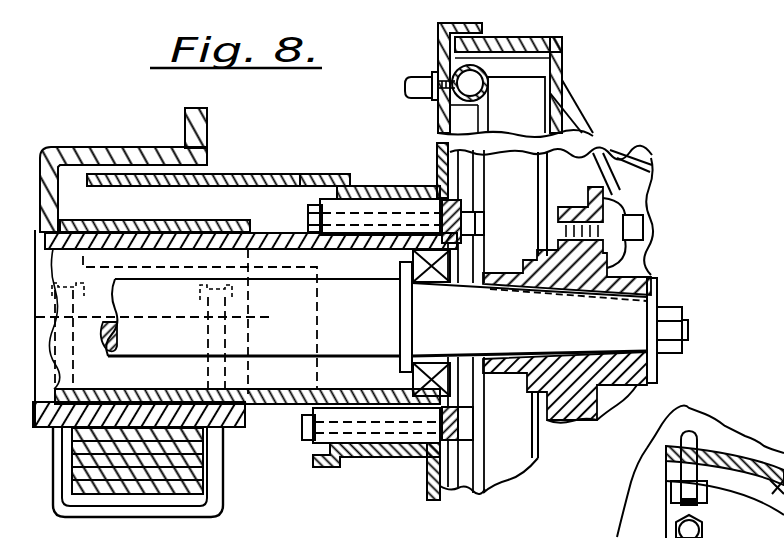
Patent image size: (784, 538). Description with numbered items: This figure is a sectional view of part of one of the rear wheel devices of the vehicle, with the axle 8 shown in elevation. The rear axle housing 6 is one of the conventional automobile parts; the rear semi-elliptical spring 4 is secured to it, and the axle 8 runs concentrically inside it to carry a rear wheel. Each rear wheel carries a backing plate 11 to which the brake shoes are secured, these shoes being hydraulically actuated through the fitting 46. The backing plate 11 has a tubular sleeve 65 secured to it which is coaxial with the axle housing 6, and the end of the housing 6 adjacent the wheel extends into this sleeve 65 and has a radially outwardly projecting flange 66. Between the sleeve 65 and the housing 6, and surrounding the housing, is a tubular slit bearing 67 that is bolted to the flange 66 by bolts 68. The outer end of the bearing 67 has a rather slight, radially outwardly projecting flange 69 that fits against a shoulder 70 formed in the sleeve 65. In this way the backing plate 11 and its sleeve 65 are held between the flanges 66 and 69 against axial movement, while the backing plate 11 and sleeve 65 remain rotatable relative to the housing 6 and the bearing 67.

The rear semi-elliptical spring 4 is at (197, 473).
The rear axle housing 6 is at (222, 232).
The axle 8 is at (355, 352).
The backing plate 11 is at (427, 478).
The fitting 46 is at (417, 77).
The tubular sleeve 65 is at (312, 177).
The flange 66 is at (463, 212).
The tubular slit bearing 67 is at (392, 193).
The bolts 68 is at (387, 201).
The flange 69 is at (336, 186).
The shoulder 70 is at (367, 211).